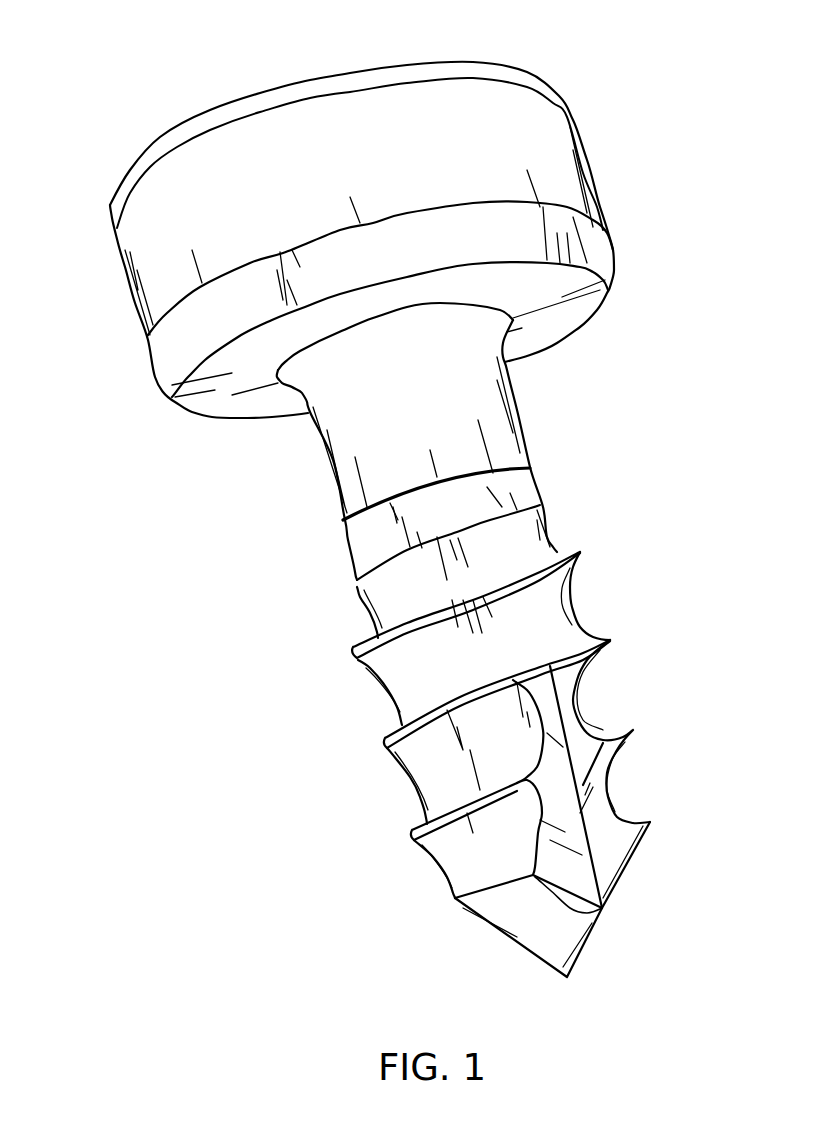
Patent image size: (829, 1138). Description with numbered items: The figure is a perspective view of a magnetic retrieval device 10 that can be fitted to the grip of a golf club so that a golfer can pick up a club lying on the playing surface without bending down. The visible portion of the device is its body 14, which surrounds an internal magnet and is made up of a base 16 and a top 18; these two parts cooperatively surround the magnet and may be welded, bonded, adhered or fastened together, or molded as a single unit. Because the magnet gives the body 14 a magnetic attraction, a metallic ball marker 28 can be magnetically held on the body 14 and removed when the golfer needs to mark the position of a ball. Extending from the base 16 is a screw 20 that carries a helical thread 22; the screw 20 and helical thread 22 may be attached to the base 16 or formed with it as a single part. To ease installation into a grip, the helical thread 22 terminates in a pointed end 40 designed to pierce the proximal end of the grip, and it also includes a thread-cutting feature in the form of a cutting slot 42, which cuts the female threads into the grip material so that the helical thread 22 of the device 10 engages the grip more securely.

The magnetic retrieval device 10 is at (106, 126).
The body 14 is at (415, 211).
The base 16 is at (600, 257).
The top 18 is at (560, 142).
The screw 20 is at (573, 605).
The helical thread 22 is at (610, 640).
The metallic ball marker 28 is at (485, 60).
The pointed end 40 is at (587, 948).
The cutting slot 42 is at (603, 822).